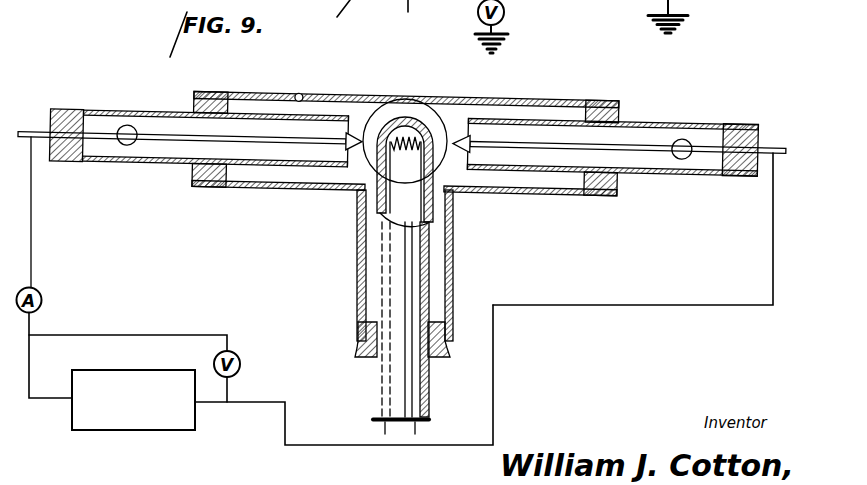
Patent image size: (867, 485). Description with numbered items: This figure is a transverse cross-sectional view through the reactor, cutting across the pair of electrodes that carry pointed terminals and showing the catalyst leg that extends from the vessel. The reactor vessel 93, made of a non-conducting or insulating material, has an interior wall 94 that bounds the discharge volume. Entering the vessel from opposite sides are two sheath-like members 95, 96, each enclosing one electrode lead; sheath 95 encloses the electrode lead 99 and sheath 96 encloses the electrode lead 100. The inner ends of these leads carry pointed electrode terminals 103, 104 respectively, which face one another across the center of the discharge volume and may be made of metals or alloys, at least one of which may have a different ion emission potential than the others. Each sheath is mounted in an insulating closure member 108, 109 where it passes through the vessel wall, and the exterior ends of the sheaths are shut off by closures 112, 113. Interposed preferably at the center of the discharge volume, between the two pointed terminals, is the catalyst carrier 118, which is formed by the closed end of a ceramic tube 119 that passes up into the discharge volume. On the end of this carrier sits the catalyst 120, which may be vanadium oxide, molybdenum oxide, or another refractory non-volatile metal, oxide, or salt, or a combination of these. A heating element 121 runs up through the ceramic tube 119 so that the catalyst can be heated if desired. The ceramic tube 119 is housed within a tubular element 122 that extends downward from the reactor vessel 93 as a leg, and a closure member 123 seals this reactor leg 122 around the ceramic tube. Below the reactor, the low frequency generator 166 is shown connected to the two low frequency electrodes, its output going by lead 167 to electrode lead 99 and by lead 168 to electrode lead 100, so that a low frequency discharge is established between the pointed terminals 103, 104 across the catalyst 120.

The reactor vessel 93 is at (255, 93).
The interior wall 94 is at (297, 94).
The sheath-like member 95 is at (122, 122).
The sheath-like member 96 is at (648, 123).
The electrode lead 99 is at (158, 138).
The electrode lead 100 is at (642, 151).
The pointed electrode terminal 103 is at (290, 187).
The pointed electrode terminal 104 is at (470, 142).
The insulating closure member 108 is at (197, 178).
The insulating closure member 109 is at (613, 113).
The closure 112 is at (57, 111).
The closure 113 is at (748, 128).
The catalyst carrier 118 is at (421, 122).
The ceramic tube 119 is at (428, 392).
The catalyst 120 is at (398, 118).
The heating element 121 is at (417, 138).
The tubular element 122 is at (452, 258).
The closure member 123 is at (357, 346).
The low frequency generator 166 is at (137, 430).
The lead 167 is at (31, 236).
The lead 168 is at (597, 305).